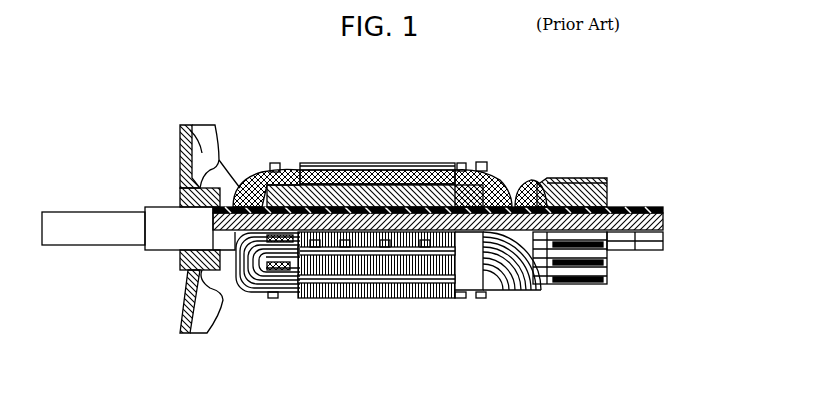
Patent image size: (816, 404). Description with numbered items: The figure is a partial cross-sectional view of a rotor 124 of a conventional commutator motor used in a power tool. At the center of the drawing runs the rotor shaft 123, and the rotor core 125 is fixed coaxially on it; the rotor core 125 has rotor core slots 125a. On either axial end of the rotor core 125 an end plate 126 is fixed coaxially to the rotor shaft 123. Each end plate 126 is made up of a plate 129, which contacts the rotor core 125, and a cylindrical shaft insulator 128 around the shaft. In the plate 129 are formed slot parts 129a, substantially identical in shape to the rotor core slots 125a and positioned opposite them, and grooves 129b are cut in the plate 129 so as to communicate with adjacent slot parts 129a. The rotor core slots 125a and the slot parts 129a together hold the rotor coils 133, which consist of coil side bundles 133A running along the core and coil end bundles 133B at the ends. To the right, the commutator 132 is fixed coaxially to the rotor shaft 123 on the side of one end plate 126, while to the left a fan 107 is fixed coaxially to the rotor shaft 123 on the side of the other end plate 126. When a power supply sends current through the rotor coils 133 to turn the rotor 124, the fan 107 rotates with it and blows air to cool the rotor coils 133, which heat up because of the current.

The fan 107 is at (185, 124).
The cylindrical shaft insulator 128 is at (204, 150).
The end plate 126 is at (270, 143).
The slot part 129a is at (298, 164).
The plate 129 is at (310, 161).
The rotor core slot 125a is at (410, 163).
The rotor coil 133 is at (441, 161).
The rotor 124 is at (598, 122).
The commutator 132 is at (610, 192).
The groove 129b is at (312, 298).
The coil side bundle 133A is at (372, 298).
The rotor core 125 is at (452, 300).
The rotor shaft 123 is at (497, 290).
The coil end bundle 133B is at (550, 284).